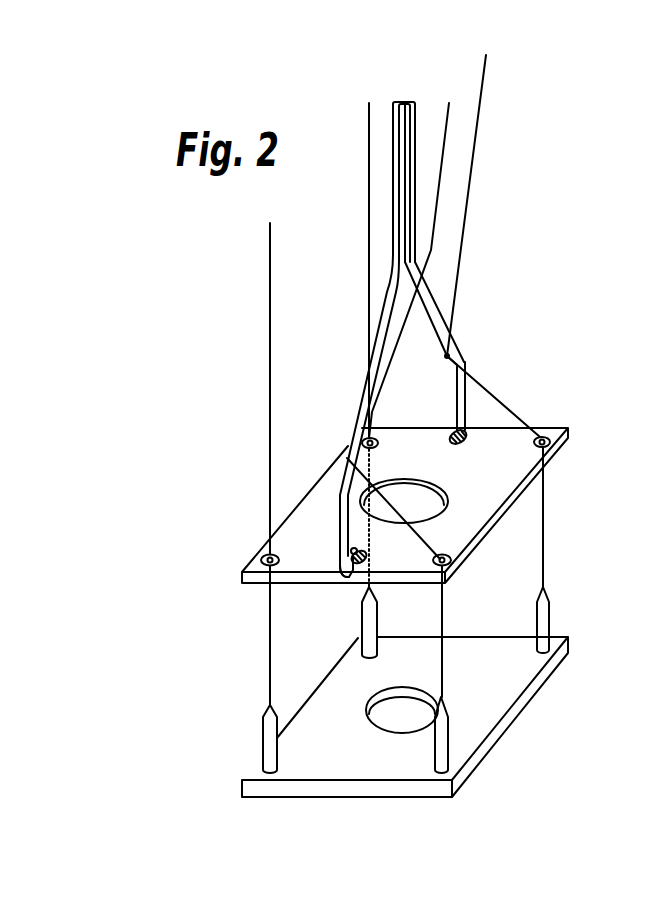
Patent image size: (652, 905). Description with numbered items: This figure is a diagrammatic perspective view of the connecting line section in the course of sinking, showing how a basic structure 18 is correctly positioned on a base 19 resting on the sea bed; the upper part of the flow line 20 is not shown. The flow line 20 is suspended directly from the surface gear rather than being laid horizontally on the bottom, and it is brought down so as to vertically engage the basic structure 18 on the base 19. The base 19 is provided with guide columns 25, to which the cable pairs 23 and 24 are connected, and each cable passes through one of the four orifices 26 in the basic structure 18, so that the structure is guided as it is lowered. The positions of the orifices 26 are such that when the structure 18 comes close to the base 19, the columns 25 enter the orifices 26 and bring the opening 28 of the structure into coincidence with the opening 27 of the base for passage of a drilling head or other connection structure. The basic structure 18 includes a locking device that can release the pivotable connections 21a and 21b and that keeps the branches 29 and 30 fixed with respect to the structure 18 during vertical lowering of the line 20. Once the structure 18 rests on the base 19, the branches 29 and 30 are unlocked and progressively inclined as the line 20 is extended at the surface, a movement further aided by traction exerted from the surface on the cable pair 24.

The basic structure 18 is at (482, 518).
The base 19 is at (492, 707).
The flow line 20 is at (382, 168).
The pivotable connection 21a is at (465, 430).
The pivotable connection 21b is at (368, 555).
The cable pair 23 is at (369, 262).
The cable pair 24 is at (475, 145).
The guide columns 25 is at (267, 733).
The orifices 26 is at (264, 557).
The opening 27 is at (390, 707).
The opening 28 is at (423, 488).
The branch 29 is at (462, 407).
The branch 30 is at (338, 548).